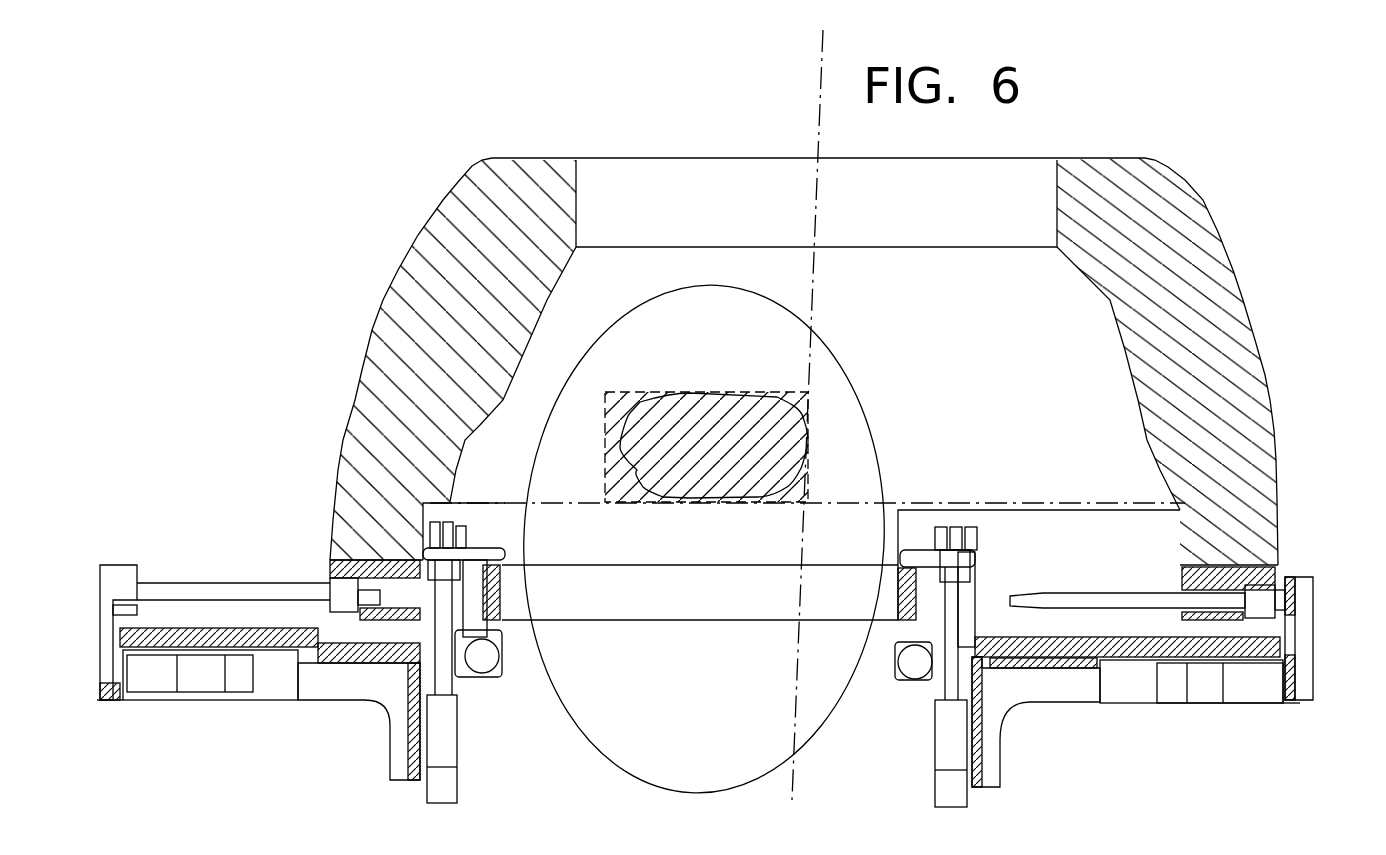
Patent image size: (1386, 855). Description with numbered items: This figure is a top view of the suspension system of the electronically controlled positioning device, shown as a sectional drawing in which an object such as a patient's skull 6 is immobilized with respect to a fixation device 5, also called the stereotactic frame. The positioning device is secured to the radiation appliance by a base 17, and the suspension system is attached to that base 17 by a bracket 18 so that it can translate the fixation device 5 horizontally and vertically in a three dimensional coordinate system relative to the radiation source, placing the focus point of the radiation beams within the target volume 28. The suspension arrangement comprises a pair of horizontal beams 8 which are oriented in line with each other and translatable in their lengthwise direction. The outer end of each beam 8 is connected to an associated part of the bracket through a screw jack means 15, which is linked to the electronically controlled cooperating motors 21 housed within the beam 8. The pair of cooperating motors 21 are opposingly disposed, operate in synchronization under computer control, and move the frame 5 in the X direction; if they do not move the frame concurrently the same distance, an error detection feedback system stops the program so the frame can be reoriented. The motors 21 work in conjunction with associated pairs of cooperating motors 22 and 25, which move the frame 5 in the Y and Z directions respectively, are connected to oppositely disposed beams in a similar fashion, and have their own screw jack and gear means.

The base 17 is at (1210, 265).
The patient's skull 6 is at (625, 745).
The target volume 28 is at (800, 405).
The fixation device 5 is at (883, 580).
The bracket 18 is at (345, 550).
The screw jack means 15 is at (98, 600).
The cooperating motors 21 is at (200, 685).
The cooperating motors 22 is at (440, 765).
The cooperating motors 25 is at (487, 665).
The horizontal beams 8 is at (315, 700).